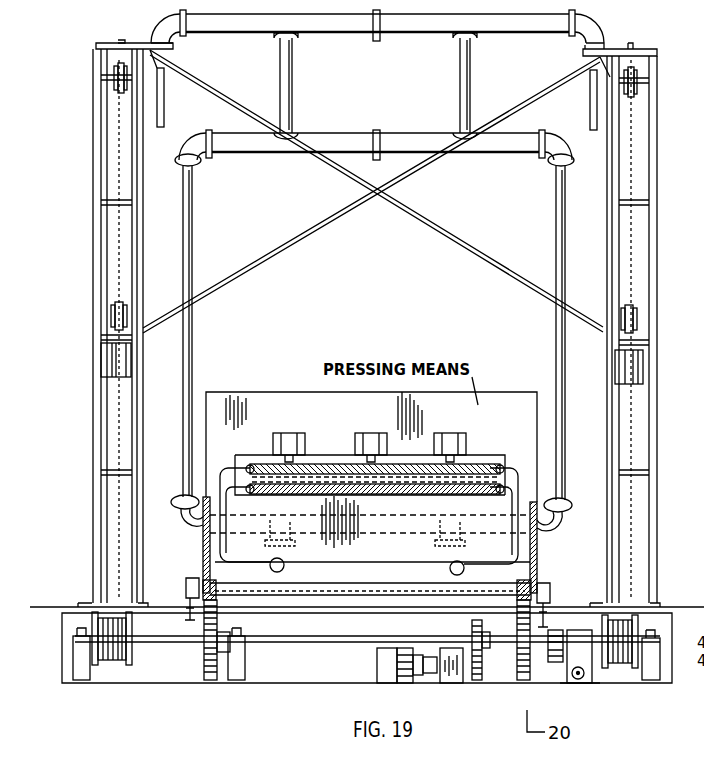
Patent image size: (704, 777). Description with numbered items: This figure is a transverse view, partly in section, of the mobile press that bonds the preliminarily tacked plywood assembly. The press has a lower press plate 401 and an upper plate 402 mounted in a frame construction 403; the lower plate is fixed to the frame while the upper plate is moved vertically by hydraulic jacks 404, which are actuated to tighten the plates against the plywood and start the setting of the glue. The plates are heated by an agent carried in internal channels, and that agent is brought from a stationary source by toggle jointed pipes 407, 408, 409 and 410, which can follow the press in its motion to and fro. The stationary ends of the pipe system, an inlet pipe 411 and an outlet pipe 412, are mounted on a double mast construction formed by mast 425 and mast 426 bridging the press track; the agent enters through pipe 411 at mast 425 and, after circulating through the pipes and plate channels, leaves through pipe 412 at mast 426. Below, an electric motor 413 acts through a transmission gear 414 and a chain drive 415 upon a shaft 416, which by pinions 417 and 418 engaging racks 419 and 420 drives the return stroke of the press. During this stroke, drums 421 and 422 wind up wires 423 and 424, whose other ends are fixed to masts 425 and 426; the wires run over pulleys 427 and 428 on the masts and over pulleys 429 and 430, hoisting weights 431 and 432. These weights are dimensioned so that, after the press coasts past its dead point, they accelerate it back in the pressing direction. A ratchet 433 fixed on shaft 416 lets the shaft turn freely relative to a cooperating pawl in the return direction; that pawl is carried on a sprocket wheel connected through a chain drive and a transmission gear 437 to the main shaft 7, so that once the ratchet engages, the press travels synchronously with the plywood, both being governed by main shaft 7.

The main shaft 7 is at (581, 676).
The lower press plate 401 is at (448, 497).
The upper plate 402 is at (310, 468).
The frame construction 403 is at (273, 400).
The hydraulic jacks 404 is at (290, 440).
The toggle jointed pipe 407 is at (192, 230).
The toggle jointed pipe 408 is at (559, 233).
The toggle jointed pipe 409 is at (293, 98).
The toggle jointed pipe 410 is at (459, 84).
The stationary inlet pipe 411 is at (166, 118).
The stationary outlet pipe 412 is at (590, 110).
The electric motor 413 is at (420, 683).
The transmission gear 414 is at (456, 676).
The chain drive 415 is at (471, 632).
The shaft 416 is at (297, 643).
The pinion 417 is at (204, 651).
The pinion 418 is at (524, 681).
The rack 419 is at (226, 594).
The rack 420 is at (517, 598).
The drum 421 is at (113, 655).
The drum 422 is at (626, 660).
The wire 423 is at (100, 437).
The wire 424 is at (645, 445).
The mast 425 is at (97, 259).
The mast 426 is at (652, 269).
The pulley 427 is at (114, 78).
The pulley 428 is at (645, 86).
The pulley 429 is at (112, 316).
The pulley 430 is at (634, 324).
The weight 431 is at (104, 358).
The weight 432 is at (642, 368).
The ratchet 433 is at (548, 656).
The transmission gear 437 is at (590, 673).